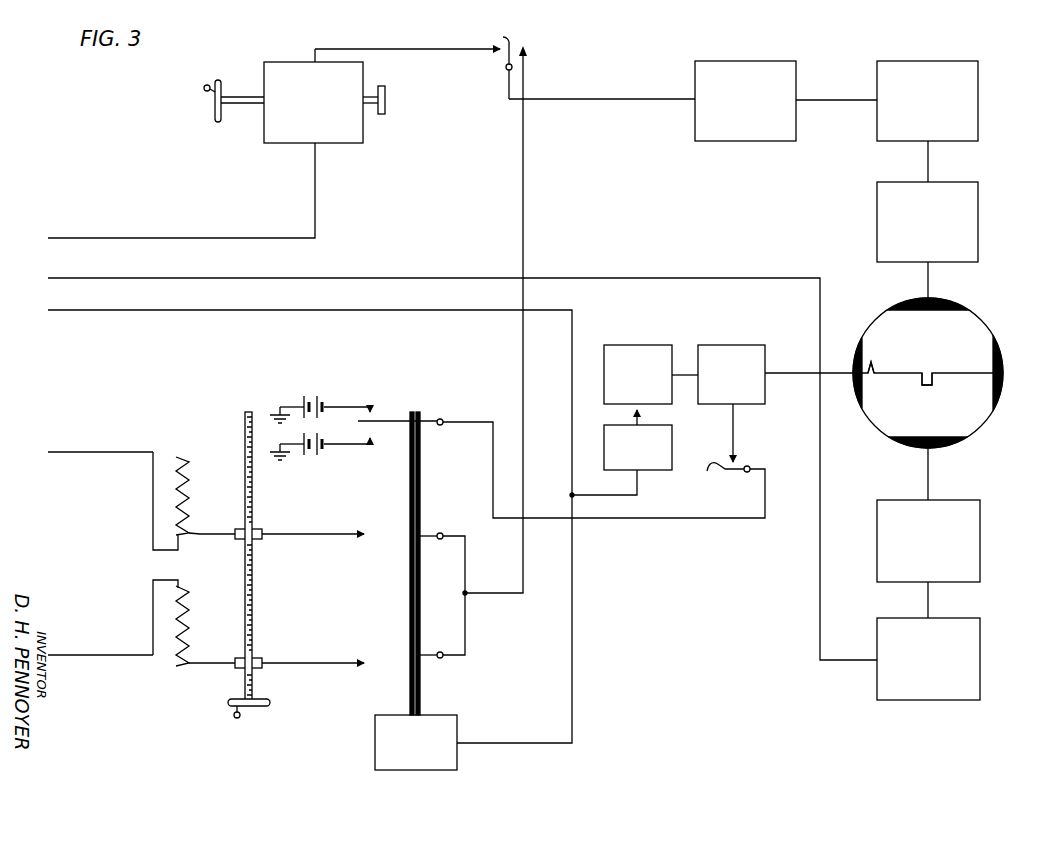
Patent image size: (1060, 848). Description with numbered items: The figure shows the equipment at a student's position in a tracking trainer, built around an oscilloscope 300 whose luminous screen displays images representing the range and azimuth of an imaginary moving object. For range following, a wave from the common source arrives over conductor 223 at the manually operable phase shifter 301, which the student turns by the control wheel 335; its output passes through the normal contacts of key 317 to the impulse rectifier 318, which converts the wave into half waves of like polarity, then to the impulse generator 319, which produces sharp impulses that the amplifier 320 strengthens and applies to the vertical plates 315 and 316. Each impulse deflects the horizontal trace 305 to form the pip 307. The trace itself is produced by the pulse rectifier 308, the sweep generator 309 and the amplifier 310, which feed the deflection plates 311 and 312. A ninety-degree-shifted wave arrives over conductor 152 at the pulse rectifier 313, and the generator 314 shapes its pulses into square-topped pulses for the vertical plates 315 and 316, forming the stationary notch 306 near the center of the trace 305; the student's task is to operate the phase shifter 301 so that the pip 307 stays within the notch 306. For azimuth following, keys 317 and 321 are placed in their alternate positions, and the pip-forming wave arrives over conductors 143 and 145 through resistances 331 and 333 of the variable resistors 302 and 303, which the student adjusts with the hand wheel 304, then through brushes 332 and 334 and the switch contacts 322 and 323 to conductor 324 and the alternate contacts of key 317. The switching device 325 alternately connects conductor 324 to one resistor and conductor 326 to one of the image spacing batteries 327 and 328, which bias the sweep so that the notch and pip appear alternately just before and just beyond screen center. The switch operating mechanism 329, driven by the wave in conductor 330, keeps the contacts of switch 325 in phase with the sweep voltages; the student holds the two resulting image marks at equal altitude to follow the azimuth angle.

The conductor 143 is at (115, 452).
The conductor 145 is at (133, 655).
The conductor 152 is at (158, 278).
The conductor 223 is at (158, 238).
The oscilloscope 300 is at (904, 378).
The phase shifter 301 is at (280, 62).
The variable resistor 302 is at (142, 501).
The variable resistor 303 is at (142, 617).
The hand wheel 304 is at (258, 706).
The horizontal trace 305 is at (950, 375).
The notch 306 is at (926, 381).
The image mark or pip 307 is at (878, 368).
The pulse rectifier 308 is at (662, 469).
The sweep generator 309 is at (665, 345).
The amplifier 310 is at (755, 345).
The deflection plate 311 is at (857, 373).
The deflection plate 312 is at (1003, 380).
The pulse rectifier 313 is at (975, 674).
The generator 314 is at (975, 556).
The vertical plate 315 is at (955, 303).
The vertical plate 316 is at (942, 446).
The key 317 is at (512, 43).
The impulse rectifier 318 is at (762, 61).
The impulse generator 319 is at (943, 61).
The amplifier 320 is at (975, 215).
The key 321 is at (724, 468).
The switch contact 322 is at (385, 540).
The switch contact 323 is at (378, 653).
The conductor 324 is at (496, 596).
The switching device 325 is at (420, 701).
The conductor 326 is at (718, 519).
The image spacing battery 327 is at (319, 398).
The image spacing battery 328 is at (310, 460).
The switch operating mechanism 329 is at (456, 769).
The conductor 330 is at (200, 310).
The resistance 331 is at (190, 489).
The brush 332 is at (207, 535).
The resistance 333 is at (190, 622).
The brush 334 is at (206, 664).
The control wheel 335 is at (214, 110).